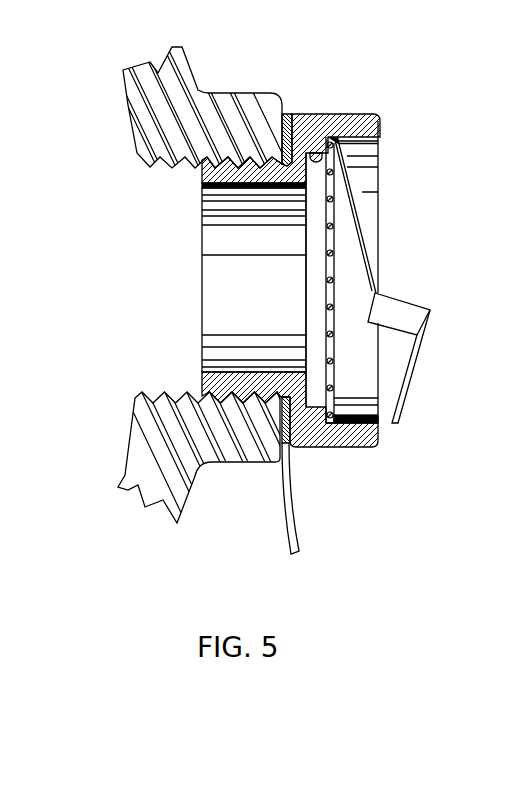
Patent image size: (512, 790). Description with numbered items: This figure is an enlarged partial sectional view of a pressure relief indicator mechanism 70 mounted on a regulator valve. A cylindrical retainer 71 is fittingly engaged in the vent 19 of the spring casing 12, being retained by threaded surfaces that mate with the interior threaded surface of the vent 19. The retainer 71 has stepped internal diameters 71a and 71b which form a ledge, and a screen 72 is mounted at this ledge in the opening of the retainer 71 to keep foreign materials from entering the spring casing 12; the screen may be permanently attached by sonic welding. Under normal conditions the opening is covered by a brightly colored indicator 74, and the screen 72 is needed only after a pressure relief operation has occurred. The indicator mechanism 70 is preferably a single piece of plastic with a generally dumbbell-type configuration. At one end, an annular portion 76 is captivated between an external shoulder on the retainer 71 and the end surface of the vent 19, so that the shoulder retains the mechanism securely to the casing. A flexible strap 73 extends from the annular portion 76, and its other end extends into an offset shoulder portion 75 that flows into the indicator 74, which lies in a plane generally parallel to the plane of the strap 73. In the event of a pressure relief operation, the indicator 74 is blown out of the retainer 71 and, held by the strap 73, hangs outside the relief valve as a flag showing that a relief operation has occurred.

The spring casing 12 is at (190, 497).
The vent 19 is at (153, 168).
The pressure relief indicator mechanism 70 is at (474, 226).
The cylindrical retainer 71 is at (378, 114).
The stepped internal diameter 71a is at (380, 152).
The stepped internal diameter 71b is at (318, 154).
The screen 72 is at (332, 240).
The flexible strap 73 is at (297, 528).
The indicator 74 is at (355, 354).
The offset shoulder portion 75 is at (400, 295).
The annular portion 76 is at (284, 114).